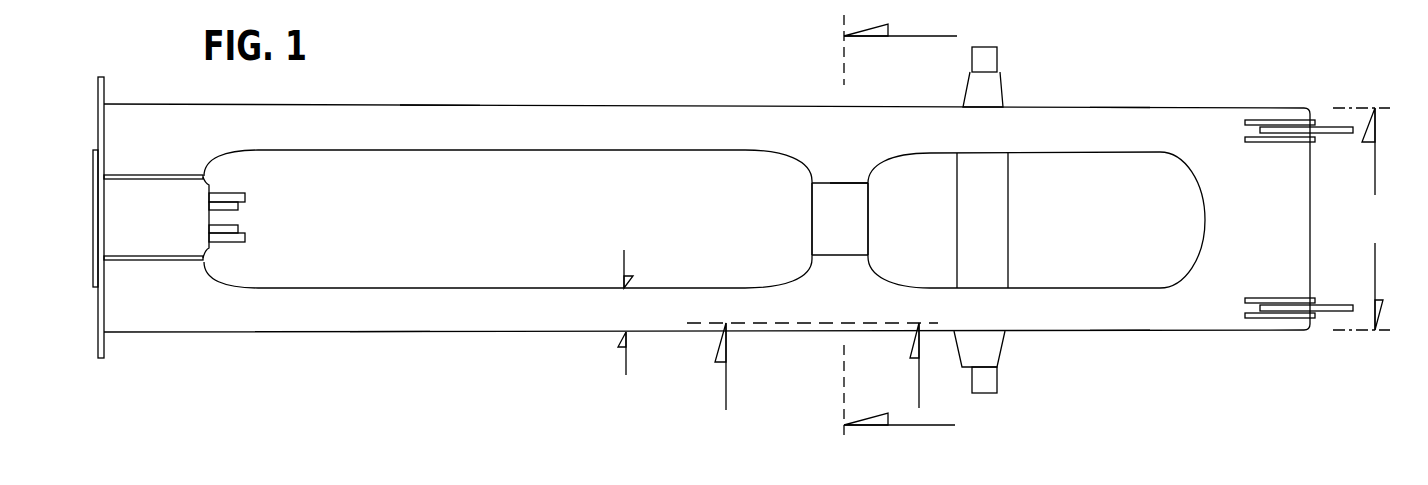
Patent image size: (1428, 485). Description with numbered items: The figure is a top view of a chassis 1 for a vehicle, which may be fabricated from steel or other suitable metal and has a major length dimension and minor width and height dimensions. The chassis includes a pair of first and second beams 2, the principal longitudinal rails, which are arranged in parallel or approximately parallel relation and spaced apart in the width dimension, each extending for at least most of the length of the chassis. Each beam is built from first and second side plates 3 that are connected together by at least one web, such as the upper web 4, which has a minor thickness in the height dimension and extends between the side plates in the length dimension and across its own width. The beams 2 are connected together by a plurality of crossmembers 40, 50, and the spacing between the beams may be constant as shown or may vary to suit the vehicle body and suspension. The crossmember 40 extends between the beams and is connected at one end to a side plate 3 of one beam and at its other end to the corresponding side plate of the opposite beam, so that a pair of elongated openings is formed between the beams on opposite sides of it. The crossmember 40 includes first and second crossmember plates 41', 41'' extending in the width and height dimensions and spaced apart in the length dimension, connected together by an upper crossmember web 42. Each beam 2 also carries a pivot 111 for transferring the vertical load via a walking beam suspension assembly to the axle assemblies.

The chassis 1 is at (564, 71).
The beam 2 is at (682, 107).
The side plate 3 is at (437, 105).
The upper web 4 is at (1093, 118).
The crossmember 40 is at (812, 214).
The first crossmember plate 41' is at (785, 226).
The second crossmember plate 41'' is at (899, 219).
The upper crossmember web 42 is at (845, 197).
The crossmember 50 is at (147, 318).
The pivot 111 is at (998, 62).